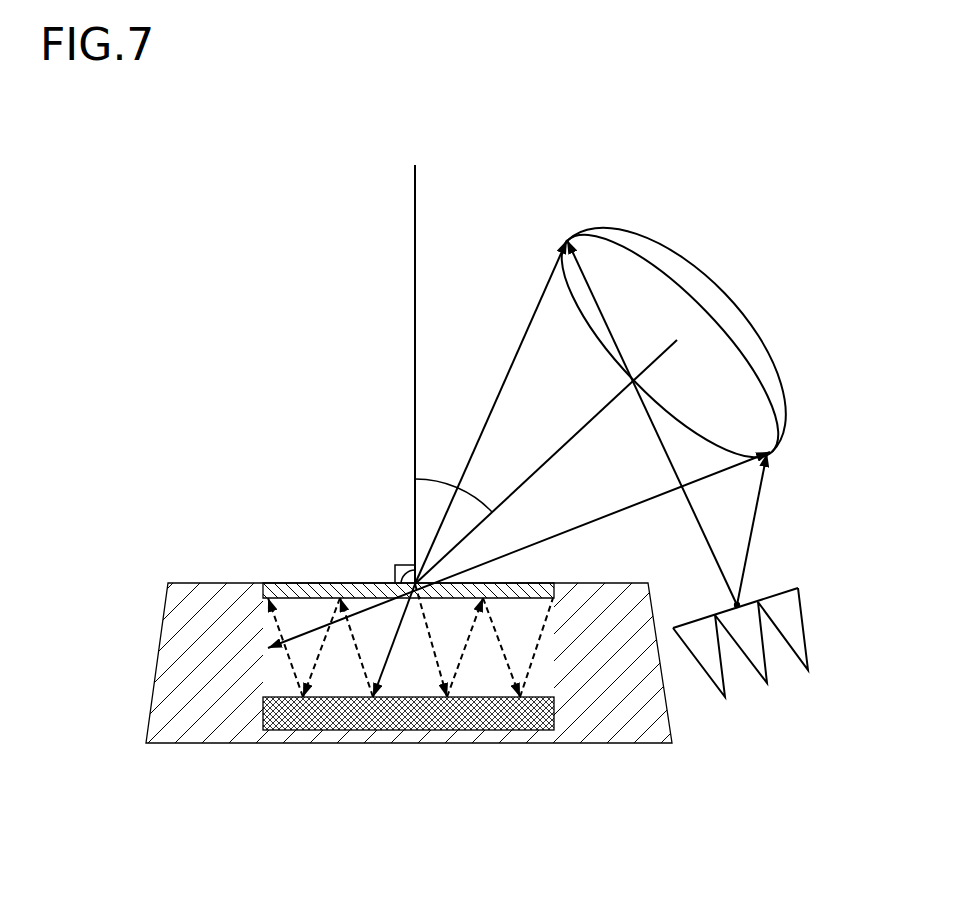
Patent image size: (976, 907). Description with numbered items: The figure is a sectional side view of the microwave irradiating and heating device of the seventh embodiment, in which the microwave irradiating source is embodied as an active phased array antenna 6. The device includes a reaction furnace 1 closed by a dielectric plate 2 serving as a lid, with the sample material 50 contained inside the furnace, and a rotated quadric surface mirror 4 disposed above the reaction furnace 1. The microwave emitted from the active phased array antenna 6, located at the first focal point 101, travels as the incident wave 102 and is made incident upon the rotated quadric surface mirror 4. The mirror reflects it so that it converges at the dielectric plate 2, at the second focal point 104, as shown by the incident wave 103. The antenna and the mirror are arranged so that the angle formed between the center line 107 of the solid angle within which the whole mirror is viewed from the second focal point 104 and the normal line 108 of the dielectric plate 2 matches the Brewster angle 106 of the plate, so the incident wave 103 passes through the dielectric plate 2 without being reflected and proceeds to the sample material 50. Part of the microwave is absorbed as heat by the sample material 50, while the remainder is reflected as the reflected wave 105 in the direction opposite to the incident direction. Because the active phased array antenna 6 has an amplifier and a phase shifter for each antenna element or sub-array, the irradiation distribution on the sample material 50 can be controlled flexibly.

The reaction furnace 1 is at (180, 655).
The dielectric plate 2 is at (310, 582).
The rotated quadric surface mirror 4 is at (703, 260).
The active phased array antenna 6 is at (765, 660).
The sample material 50 is at (398, 718).
The first focal point 101 is at (742, 603).
The incident wave 102 is at (758, 510).
The incident wave 103 is at (533, 312).
The second focal point 104 is at (395, 573).
The reflected wave 105 is at (357, 653).
The Brewster angle 106 is at (440, 482).
The center line 107 is at (580, 430).
The normal line 108 is at (415, 222).